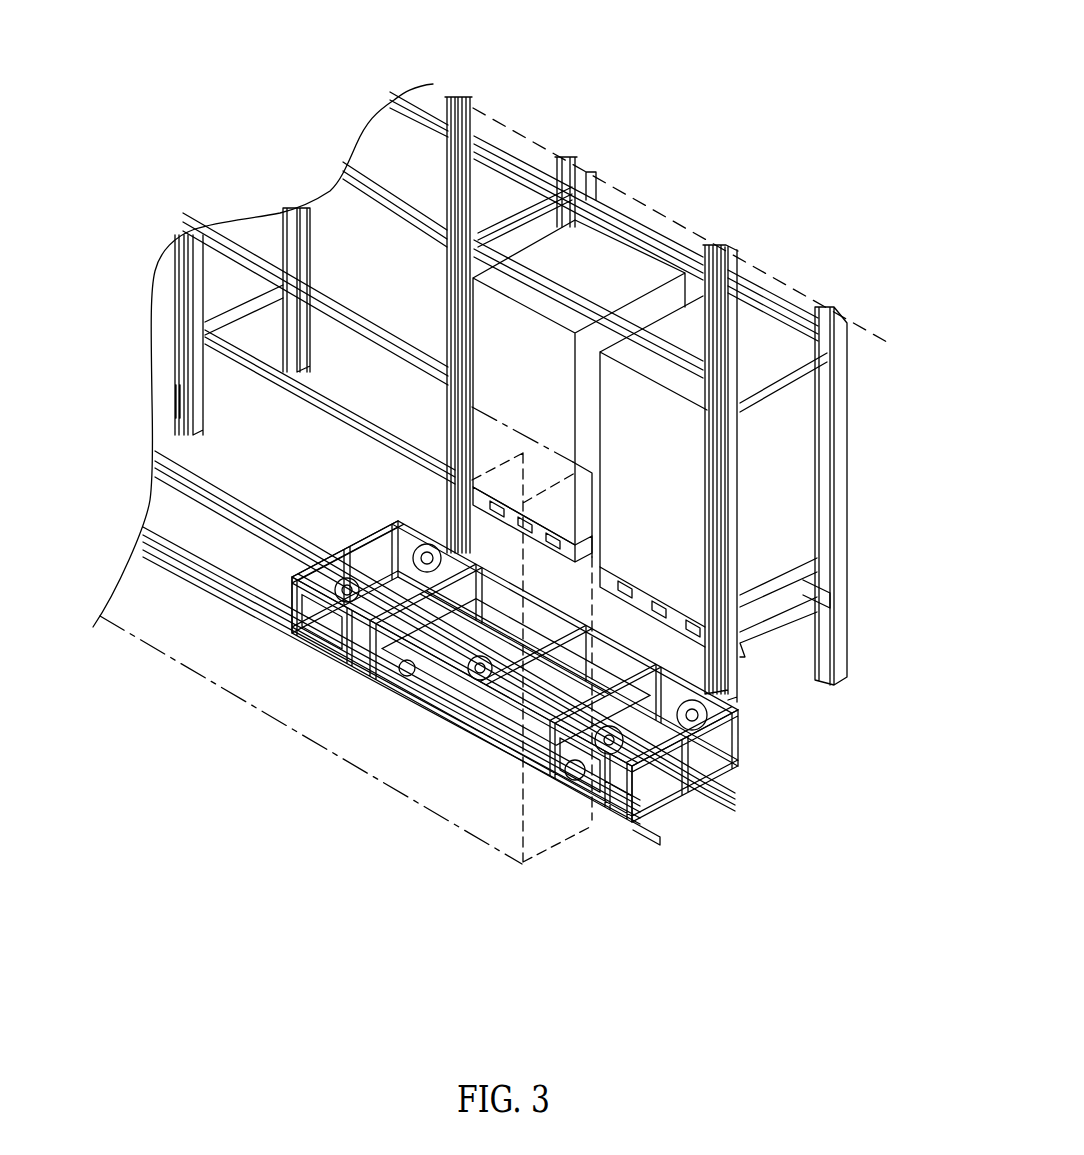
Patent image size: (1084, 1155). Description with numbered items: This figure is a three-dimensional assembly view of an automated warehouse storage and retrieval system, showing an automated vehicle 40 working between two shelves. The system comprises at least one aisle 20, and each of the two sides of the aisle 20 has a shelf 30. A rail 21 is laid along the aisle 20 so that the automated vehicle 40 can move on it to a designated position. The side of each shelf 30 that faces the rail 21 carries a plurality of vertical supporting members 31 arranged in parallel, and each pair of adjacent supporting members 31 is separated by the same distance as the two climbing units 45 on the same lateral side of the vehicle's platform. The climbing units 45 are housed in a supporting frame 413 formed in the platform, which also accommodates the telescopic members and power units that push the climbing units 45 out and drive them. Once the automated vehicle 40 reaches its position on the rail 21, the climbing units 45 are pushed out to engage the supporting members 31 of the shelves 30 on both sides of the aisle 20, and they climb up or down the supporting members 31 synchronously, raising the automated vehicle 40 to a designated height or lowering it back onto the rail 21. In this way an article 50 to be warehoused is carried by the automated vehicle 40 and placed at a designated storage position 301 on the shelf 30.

The aisle 20 is at (416, 625).
The rail 21 is at (206, 484).
The shelf 30 is at (525, 403).
The supporting member 31 is at (455, 97).
The storage position 301 is at (325, 218).
The automated vehicle 40 is at (511, 666).
The supporting frame 413 is at (360, 537).
The climbing unit 45 is at (434, 540).
The article 50 is at (471, 322).